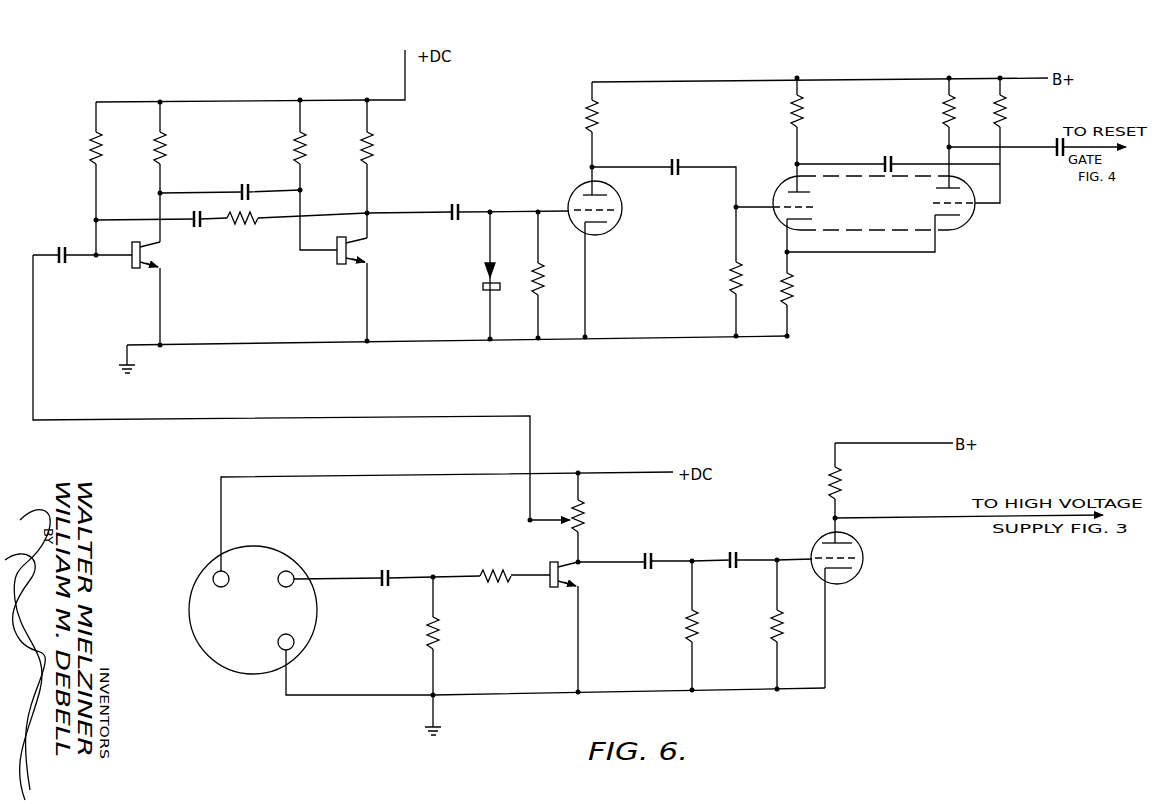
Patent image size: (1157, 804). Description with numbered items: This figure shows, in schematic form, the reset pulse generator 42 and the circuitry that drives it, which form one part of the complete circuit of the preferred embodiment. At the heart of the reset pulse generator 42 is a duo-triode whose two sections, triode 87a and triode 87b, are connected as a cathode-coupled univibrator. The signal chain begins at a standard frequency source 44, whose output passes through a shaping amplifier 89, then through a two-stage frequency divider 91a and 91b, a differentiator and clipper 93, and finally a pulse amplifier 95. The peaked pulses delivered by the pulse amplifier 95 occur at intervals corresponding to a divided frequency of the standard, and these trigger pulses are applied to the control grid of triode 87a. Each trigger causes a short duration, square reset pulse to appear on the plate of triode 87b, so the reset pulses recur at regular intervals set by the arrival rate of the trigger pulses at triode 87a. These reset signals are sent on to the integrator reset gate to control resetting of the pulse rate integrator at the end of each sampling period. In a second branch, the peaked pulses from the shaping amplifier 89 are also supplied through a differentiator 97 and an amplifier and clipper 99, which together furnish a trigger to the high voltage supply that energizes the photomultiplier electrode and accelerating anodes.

The reset pulse generator 42 is at (888, 140).
The standard frequency source 44 is at (230, 667).
The triode 87a is at (782, 186).
The triode 87b is at (956, 232).
The shaping amplifier 89 is at (580, 581).
The frequency divider 91a is at (167, 259).
The frequency divider 91b is at (374, 258).
The differentiator and clipper 93 is at (528, 278).
The pulse amplifier 95 is at (614, 228).
The differentiator 97 is at (729, 595).
The amplifier and clipper 99 is at (863, 560).